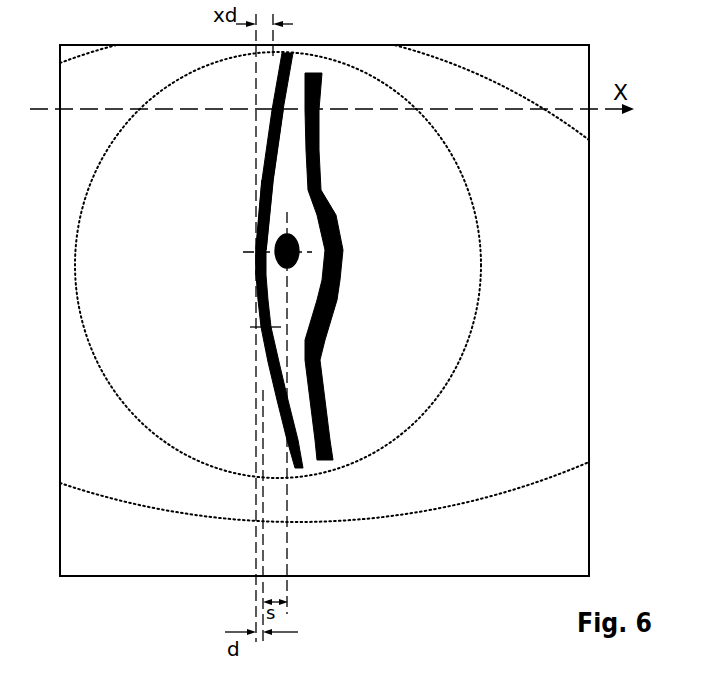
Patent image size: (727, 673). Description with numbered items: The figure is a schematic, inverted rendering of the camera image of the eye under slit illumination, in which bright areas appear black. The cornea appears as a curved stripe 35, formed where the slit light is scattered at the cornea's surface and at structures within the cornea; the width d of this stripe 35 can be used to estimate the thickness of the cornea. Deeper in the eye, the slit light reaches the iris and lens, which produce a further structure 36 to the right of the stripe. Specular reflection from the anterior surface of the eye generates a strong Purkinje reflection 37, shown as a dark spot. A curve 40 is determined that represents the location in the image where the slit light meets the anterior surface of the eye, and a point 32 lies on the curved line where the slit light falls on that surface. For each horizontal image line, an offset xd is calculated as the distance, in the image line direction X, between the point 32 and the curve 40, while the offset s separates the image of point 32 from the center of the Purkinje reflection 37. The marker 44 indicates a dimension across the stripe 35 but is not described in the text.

The point 32 is at (228, 241).
The curved stripe 35 is at (328, 180).
The further structure 36 is at (350, 266).
The Purkinje reflection 37 is at (336, 271).
The curve 40 is at (253, 260).
The thickness of deformable element 44 is at (244, 343).